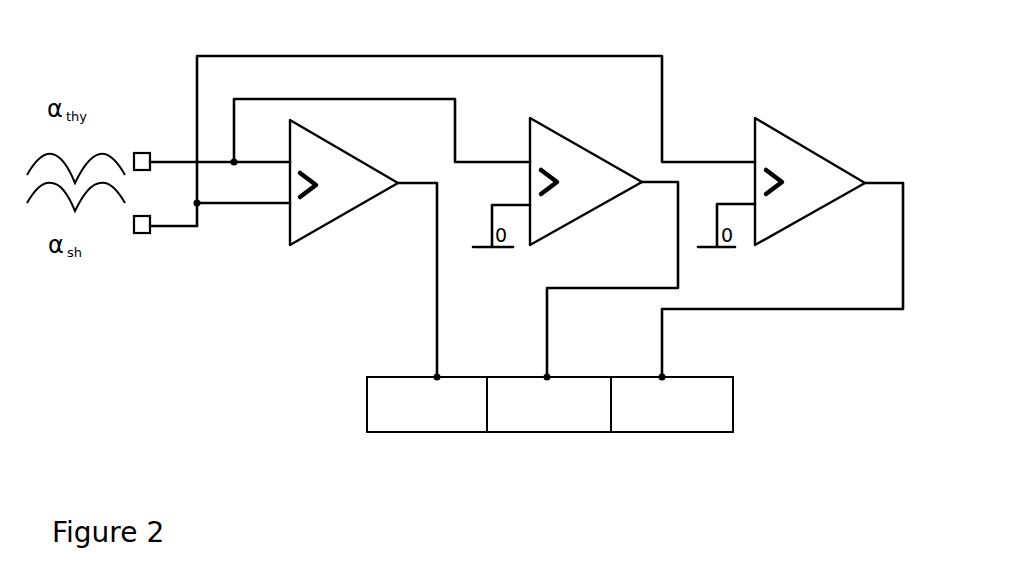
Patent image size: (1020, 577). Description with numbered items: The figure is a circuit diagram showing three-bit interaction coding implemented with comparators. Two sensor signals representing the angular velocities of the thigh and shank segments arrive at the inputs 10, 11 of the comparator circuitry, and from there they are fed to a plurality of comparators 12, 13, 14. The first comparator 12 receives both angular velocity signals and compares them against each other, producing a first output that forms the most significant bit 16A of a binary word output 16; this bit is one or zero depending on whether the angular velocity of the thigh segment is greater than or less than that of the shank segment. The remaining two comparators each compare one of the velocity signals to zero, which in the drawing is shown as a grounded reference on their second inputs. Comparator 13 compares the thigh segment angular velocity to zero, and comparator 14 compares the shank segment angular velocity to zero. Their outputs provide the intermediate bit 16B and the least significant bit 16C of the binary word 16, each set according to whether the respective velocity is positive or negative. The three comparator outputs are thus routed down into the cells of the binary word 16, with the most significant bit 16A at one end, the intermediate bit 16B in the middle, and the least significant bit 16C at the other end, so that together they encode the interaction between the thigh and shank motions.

The input 10 is at (147, 152).
The input 11 is at (143, 236).
The comparator 12 is at (323, 223).
The comparator 13 is at (565, 227).
The comparator 14 is at (783, 228).
The binary word output 16 is at (481, 426).
The most significant bit 16A is at (378, 430).
The intermediate bit 16B is at (530, 426).
The least significant bit 16C is at (715, 425).